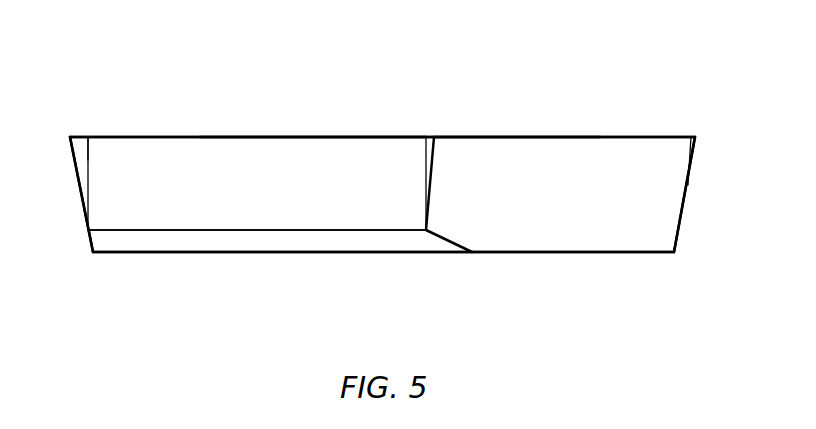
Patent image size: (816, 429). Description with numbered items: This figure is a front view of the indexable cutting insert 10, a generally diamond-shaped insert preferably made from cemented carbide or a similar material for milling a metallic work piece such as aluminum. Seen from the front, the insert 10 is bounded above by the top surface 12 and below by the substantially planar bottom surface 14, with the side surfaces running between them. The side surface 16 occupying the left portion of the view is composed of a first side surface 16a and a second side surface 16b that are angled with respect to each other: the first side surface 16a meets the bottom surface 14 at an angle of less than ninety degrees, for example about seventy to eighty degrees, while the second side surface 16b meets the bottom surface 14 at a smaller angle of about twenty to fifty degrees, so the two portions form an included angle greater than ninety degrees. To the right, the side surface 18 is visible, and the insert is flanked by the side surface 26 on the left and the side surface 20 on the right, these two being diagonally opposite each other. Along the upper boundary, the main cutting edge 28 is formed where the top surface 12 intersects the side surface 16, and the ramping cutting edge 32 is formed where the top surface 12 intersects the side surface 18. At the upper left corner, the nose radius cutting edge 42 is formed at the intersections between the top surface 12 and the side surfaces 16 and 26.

The indexable cutting insert 10 is at (682, 77).
The top surface 12 is at (549, 128).
The bottom surface 14 is at (252, 258).
The side surface 16 is at (202, 210).
The first side surface 16a is at (200, 155).
The second side surface 16b is at (125, 242).
The side surface 18 is at (607, 217).
The side surface 20 is at (696, 192).
The side surface 26 is at (74, 193).
The main cutting edge 28 is at (339, 136).
The ramping cutting edge 32 is at (514, 136).
The nose radius cutting edge 42 is at (82, 136).